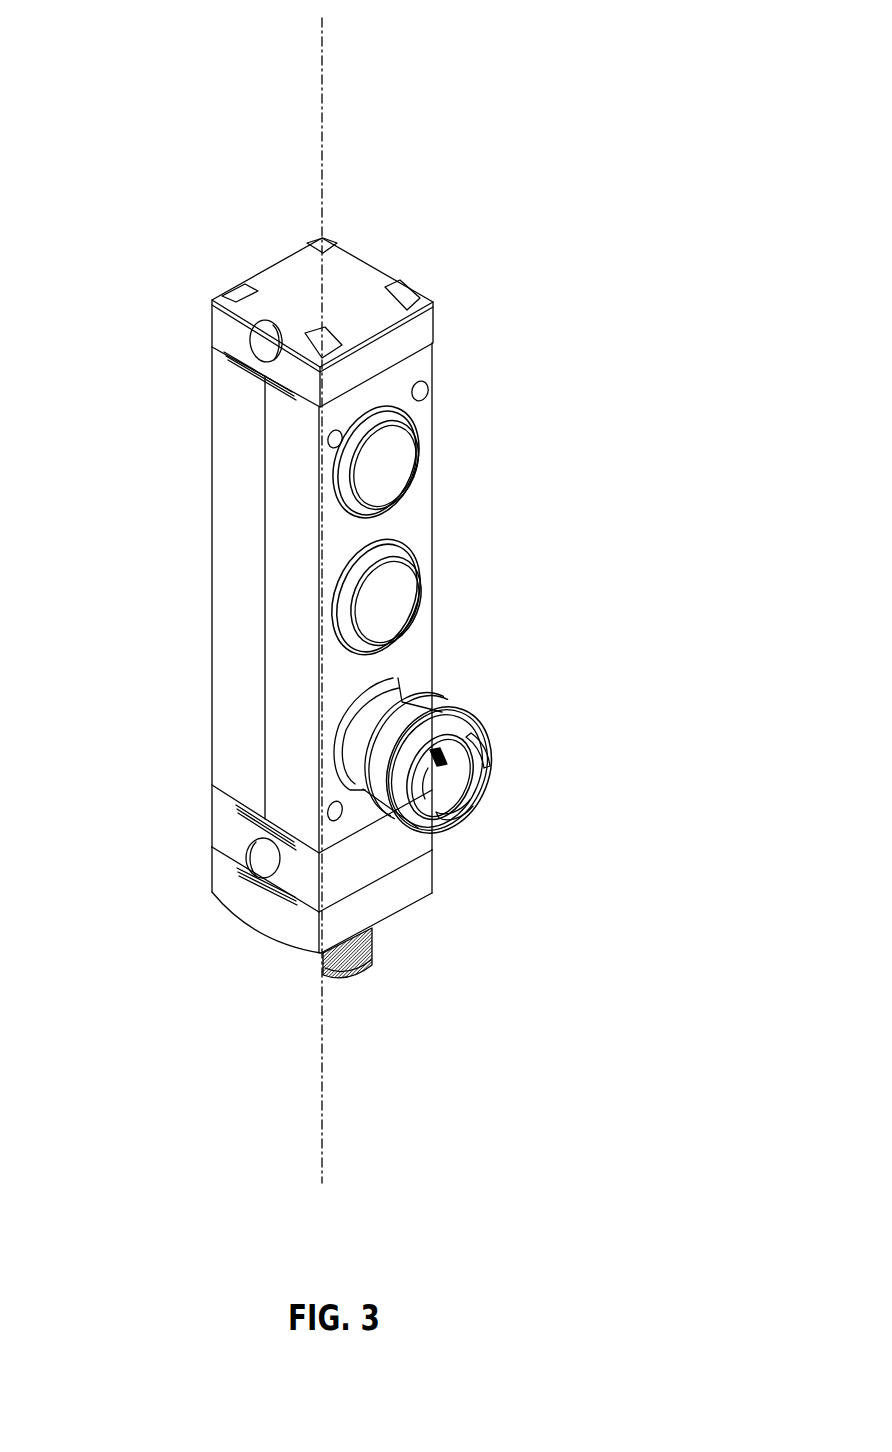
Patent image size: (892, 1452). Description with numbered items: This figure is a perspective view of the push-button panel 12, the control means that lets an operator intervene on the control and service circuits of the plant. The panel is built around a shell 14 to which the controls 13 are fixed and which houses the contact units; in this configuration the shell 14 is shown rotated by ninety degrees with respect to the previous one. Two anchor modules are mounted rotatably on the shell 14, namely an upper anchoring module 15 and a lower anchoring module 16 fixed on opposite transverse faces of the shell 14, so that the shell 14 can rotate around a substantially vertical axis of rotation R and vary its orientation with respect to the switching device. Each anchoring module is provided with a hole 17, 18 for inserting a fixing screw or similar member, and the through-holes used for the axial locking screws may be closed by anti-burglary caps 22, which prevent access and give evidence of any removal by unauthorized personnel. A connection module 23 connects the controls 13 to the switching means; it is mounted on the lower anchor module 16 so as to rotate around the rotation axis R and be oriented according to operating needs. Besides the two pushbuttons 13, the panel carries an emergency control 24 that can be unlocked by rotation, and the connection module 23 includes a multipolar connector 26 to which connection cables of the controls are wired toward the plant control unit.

The axis of rotation R is at (322, 50).
The push-button panel 12 is at (520, 257).
The controls 13 is at (397, 598).
The shell 14 is at (228, 523).
The upper anchoring module 15 is at (280, 272).
The lower anchoring module 16 is at (223, 827).
The hole 17 is at (262, 346).
The hole 18 is at (268, 857).
The anti-burglary caps 22 is at (256, 300).
The connection module 23 is at (242, 912).
The emergency control 24 is at (473, 777).
The multipolar connector 26 is at (373, 958).